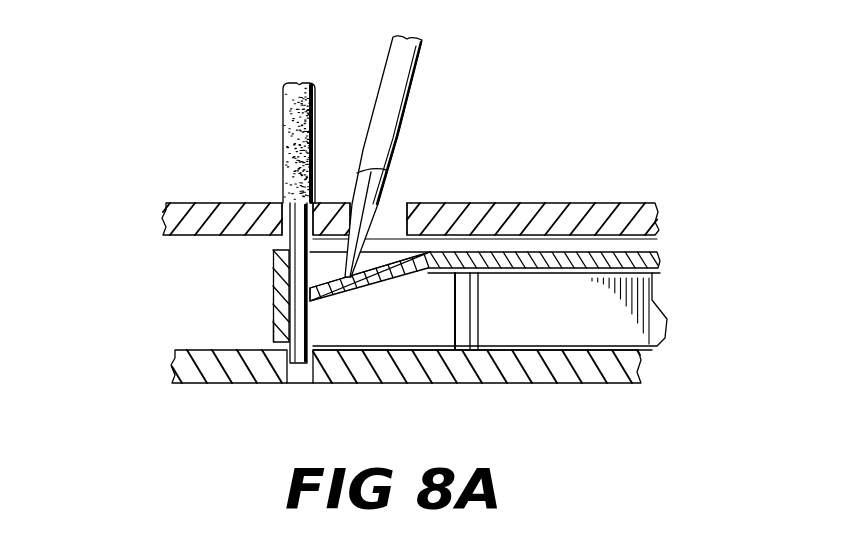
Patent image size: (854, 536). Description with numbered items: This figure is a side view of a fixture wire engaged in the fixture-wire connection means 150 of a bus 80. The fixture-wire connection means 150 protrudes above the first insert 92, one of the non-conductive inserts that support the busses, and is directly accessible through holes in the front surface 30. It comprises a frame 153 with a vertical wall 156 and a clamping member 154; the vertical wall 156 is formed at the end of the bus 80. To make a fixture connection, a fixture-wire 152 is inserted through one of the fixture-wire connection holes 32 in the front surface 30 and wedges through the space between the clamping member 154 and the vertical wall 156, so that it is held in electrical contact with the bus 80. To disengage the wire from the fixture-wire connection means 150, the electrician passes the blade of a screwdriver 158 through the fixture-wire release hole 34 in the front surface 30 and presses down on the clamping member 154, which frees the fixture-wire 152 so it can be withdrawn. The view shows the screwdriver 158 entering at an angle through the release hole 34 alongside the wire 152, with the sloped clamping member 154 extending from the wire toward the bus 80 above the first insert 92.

The front surface 30 is at (190, 204).
The fixture-wire connection hole 32 is at (297, 199).
The fixture-wire release hole 34 is at (402, 220).
The bus 80 is at (657, 343).
The first insert 92 is at (260, 374).
The fixture-wire connection means 150 is at (185, 292).
The fixture-wire 152 is at (297, 113).
The frame 153 is at (271, 328).
The clamping member 154 is at (372, 283).
The vertical wall 156 is at (279, 288).
The screwdriver 158 is at (404, 96).